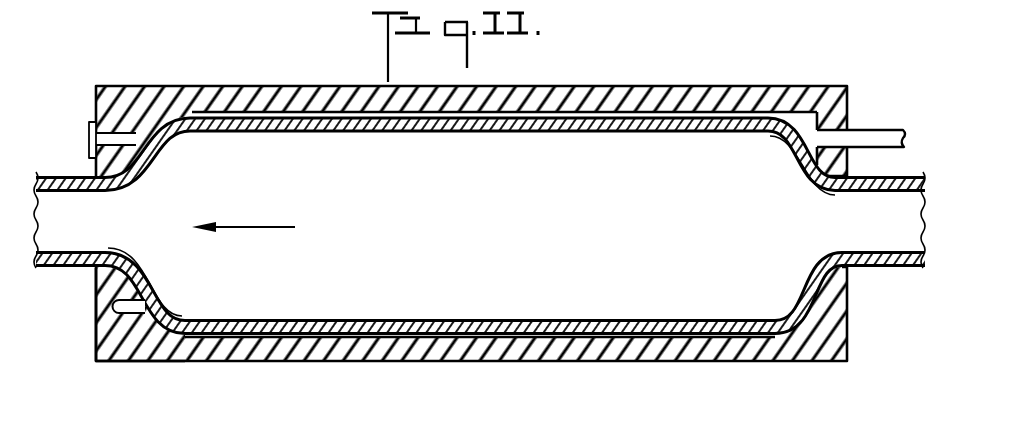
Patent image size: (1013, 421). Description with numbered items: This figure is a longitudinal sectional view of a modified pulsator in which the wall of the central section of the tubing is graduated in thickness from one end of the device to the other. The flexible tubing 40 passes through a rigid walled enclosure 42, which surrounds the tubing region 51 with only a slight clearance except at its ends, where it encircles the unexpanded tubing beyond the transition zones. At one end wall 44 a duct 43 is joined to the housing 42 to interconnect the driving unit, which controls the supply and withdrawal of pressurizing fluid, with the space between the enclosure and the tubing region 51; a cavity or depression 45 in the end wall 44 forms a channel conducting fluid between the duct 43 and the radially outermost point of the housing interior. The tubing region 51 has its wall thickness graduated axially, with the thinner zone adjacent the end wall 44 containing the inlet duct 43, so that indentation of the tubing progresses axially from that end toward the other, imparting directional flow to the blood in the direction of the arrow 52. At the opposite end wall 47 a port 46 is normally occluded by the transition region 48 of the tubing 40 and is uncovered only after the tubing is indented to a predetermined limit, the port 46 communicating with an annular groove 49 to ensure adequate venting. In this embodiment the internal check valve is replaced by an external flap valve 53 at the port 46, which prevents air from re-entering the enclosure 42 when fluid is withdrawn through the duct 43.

The flexible tubing 40 is at (887, 267).
The rigid walled enclosure 42 is at (643, 88).
The duct 43 is at (900, 129).
The end wall 44 is at (847, 115).
The cavity or depression 45 is at (803, 130).
The port 46 is at (127, 137).
The end wall 47 is at (100, 338).
The transition region 48 is at (150, 160).
The annular groove 49 is at (116, 305).
The tubing region 51 is at (427, 132).
The arrow 52 is at (263, 222).
The external flap valve 53 is at (88, 145).